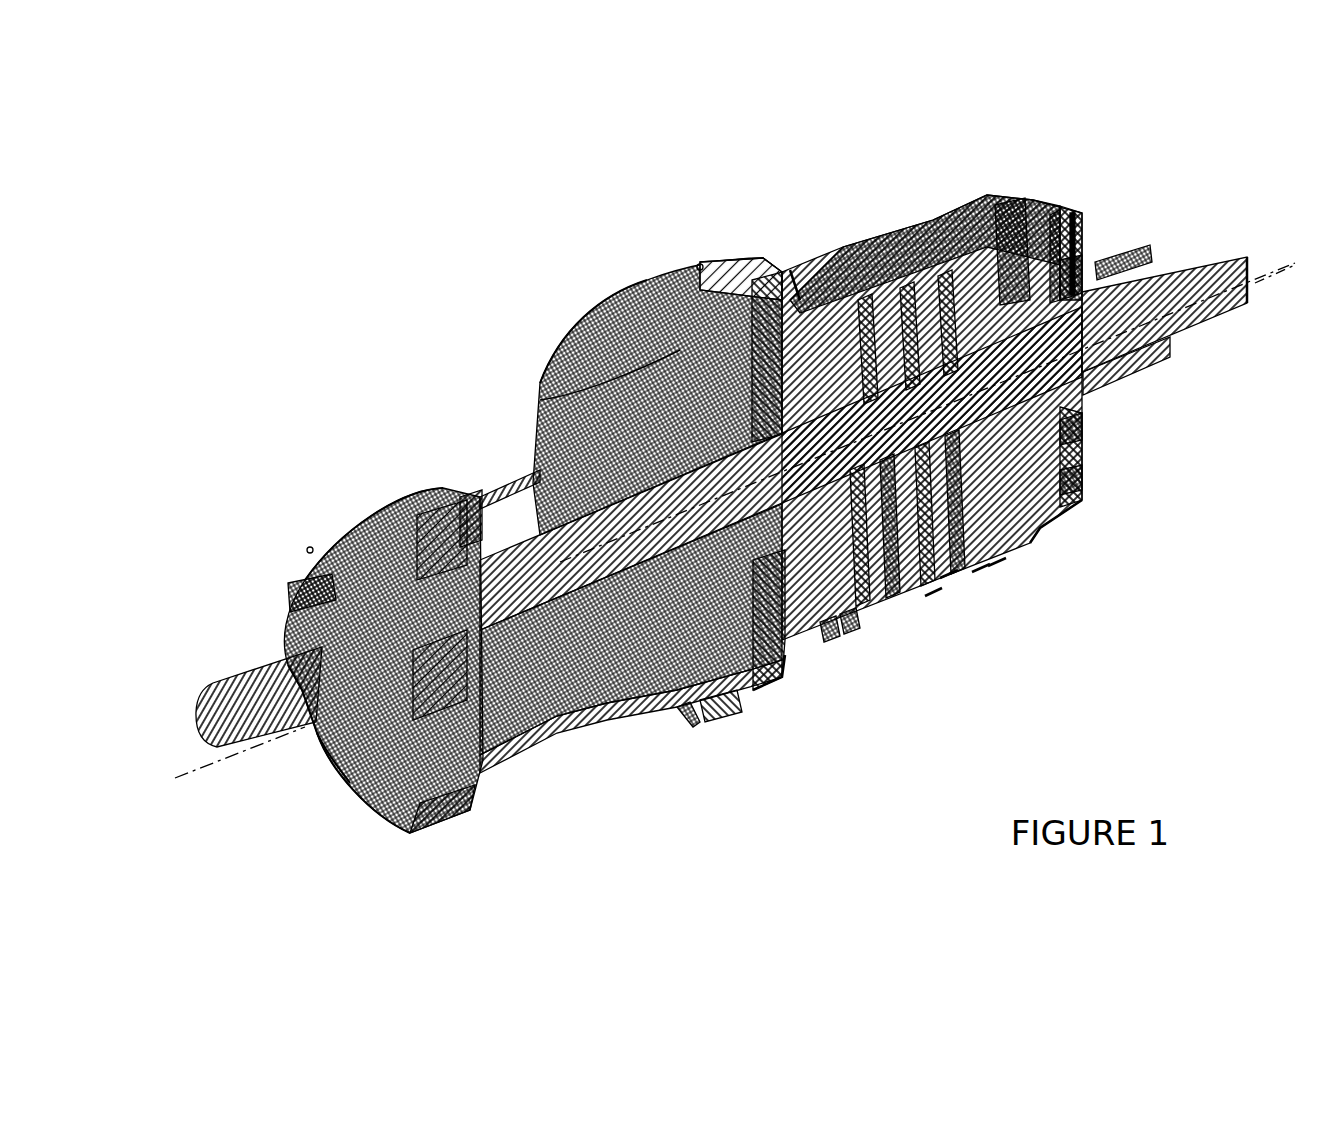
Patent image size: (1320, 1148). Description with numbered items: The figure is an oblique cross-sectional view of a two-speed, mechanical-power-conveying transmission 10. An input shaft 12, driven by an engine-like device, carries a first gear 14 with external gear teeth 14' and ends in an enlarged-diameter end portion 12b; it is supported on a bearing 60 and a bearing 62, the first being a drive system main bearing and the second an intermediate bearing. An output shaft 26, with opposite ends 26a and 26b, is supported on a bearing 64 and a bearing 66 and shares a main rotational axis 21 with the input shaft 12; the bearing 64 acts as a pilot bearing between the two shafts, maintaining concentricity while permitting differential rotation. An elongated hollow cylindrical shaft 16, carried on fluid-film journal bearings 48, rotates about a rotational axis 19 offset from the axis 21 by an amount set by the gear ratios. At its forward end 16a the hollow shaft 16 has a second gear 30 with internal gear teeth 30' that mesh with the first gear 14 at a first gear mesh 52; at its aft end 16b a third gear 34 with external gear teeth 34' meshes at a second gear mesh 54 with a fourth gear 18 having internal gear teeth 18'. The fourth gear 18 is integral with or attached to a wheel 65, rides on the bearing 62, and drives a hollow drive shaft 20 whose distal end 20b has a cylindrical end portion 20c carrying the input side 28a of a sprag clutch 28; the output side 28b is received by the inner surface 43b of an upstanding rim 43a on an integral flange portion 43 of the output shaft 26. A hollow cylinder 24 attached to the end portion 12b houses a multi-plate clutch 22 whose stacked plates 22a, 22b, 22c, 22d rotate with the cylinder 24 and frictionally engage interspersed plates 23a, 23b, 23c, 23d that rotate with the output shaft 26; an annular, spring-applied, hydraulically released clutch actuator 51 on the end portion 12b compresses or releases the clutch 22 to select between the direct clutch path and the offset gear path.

The two-speed mechanical-power-conveying transmission 10 is at (712, 198).
The input shaft 12 is at (222, 680).
The end portion of input shaft 12b is at (800, 267).
The first gear 14 is at (423, 568).
The external gear teeth of first gear 14' is at (342, 534).
The elongated hollow cylindrical shaft 16 is at (557, 737).
The forward end of hollow shaft 16a is at (357, 797).
The aft end of hollow shaft 16b is at (767, 693).
The fourth gear 18 is at (657, 541).
The internal gear teeth of fourth gear 18' is at (576, 306).
The rotational axis of offset shaft 19 is at (220, 760).
The hollow drive shaft 20 is at (1007, 560).
The distal end of hollow drive shaft 20b is at (1040, 522).
The cylindrical end portion 20c is at (1083, 270).
The main rotational axis 21 is at (187, 732).
The multi-plate clutch 22 is at (845, 275).
The clutch plate 22a is at (953, 577).
The clutch plate 22b is at (933, 593).
The clutch plate 22c is at (980, 567).
The clutch plate 22d is at (997, 563).
The clutch plate 23a is at (863, 617).
The clutch plate 23b is at (877, 613).
The clutch plate 23c is at (940, 600).
The clutch plate 23d is at (927, 603).
The hollow cylinder 24 is at (940, 240).
The output shaft 26 is at (1203, 267).
The end of output shaft 26a is at (700, 267).
The end of output shaft 26b is at (1250, 300).
The sprag clutch 28 is at (1133, 383).
The input side of sprag clutch 28a is at (1083, 442).
The output side of sprag clutch 28b is at (1083, 480).
The second gear 30 is at (424, 852).
The internal gear teeth of second gear 30' is at (302, 767).
The third gear 34 is at (805, 636).
The external gear teeth of third gear 34' is at (570, 327).
The flange portion 43 is at (1083, 230).
The upstanding rim 43a is at (1057, 220).
The inner surface of rim 43b is at (1080, 220).
The bearings 48 is at (548, 385).
The clutch actuator 51 is at (1017, 203).
The first gear mesh 52 is at (453, 510).
The second gear mesh 54 is at (730, 707).
The bearing 60 is at (293, 607).
The bearing 62 is at (827, 630).
The bearing 64 is at (847, 630).
The wheel 65 is at (768, 285).
The bearing 66 is at (1140, 253).